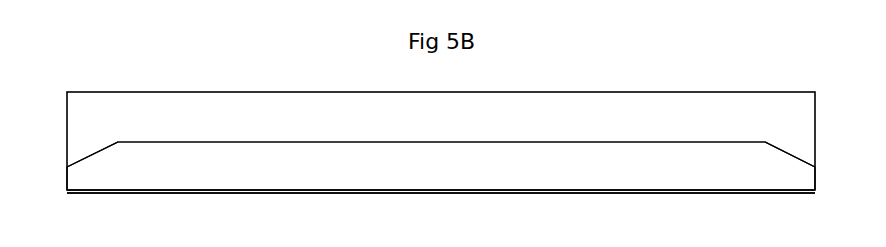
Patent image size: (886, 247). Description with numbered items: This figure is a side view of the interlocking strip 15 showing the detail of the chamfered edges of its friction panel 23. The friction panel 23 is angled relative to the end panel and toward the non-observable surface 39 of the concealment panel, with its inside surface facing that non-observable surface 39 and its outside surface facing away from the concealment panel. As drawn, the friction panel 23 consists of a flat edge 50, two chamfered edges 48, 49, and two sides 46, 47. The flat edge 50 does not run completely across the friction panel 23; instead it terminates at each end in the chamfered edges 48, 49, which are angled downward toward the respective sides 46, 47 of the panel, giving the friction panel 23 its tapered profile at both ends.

The interlocking strip 15 is at (683, 180).
The friction panel 23 is at (438, 173).
The non-observable surface 39 is at (577, 125).
The side 46 is at (67, 178).
The side 47 is at (816, 180).
The chamfered edge 48 is at (87, 153).
The chamfered edge 49 is at (794, 147).
The flat edge 50 is at (401, 142).